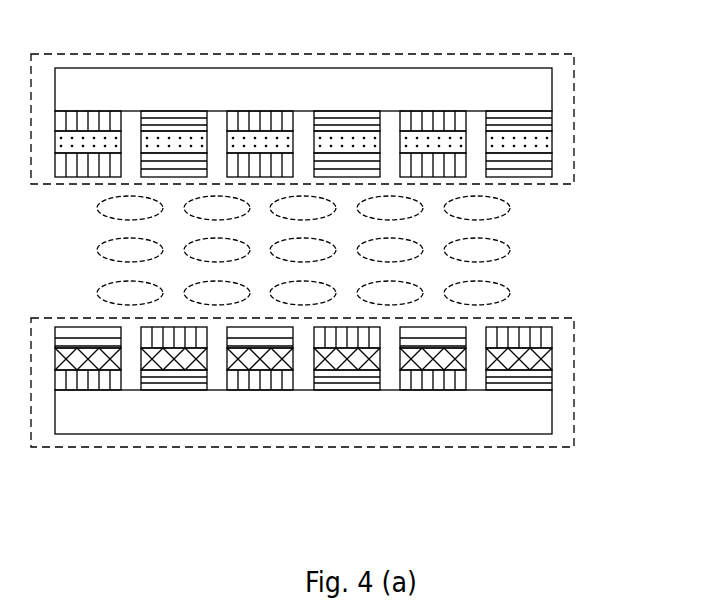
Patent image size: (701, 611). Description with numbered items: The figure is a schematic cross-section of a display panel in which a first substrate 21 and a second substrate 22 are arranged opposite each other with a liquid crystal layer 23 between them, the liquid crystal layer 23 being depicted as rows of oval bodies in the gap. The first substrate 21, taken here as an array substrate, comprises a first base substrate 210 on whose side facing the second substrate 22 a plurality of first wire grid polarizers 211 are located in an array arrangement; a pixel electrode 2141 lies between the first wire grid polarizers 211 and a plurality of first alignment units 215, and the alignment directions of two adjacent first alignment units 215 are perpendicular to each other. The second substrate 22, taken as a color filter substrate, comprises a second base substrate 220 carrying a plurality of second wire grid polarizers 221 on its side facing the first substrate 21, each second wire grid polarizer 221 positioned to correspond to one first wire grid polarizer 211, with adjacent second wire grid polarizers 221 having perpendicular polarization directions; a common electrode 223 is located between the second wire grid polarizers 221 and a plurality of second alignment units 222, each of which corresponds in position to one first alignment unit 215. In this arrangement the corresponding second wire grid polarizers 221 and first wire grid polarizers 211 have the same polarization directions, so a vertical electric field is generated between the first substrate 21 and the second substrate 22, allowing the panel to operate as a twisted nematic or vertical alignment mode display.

The second substrate 22 is at (175, 54).
The second base substrate 220 is at (413, 68).
The second wire grid polarizers 221 is at (548, 121).
The common electrode 223 is at (548, 146).
The second alignment units 222 is at (548, 170).
The liquid crystal layer 23 is at (508, 274).
The first substrate 21 is at (232, 447).
The first base substrate 210 is at (422, 434).
The first alignment units 215 is at (548, 338).
The pixel electrode 2141 is at (548, 357).
The first wire grid polarizers 211 is at (548, 376).